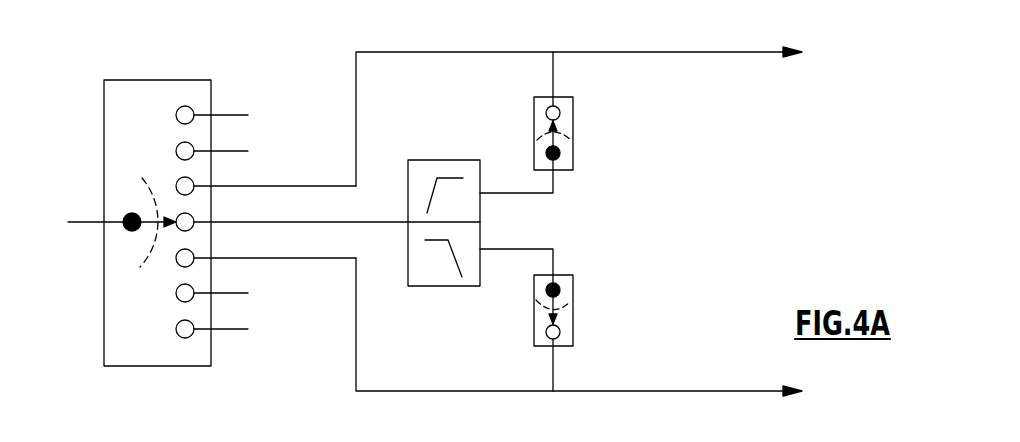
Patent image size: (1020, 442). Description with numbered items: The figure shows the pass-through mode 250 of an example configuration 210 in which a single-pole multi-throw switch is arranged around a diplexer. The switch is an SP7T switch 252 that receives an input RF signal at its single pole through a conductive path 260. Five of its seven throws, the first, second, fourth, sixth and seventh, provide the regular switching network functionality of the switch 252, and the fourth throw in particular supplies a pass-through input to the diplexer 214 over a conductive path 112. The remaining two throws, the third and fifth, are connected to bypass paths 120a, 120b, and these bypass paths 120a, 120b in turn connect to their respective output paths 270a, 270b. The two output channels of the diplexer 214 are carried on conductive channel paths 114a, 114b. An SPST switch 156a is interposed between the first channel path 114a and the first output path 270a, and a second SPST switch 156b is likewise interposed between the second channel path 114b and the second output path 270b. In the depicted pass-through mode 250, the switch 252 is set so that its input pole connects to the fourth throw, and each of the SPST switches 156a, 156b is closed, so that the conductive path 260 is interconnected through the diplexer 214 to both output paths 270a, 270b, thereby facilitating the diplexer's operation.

The configuration 210 is at (813, 150).
The pass-through mode 250 is at (297, 44).
The SP7T switch 252 is at (155, 80).
The conductive path 260 is at (98, 221).
The bypass path 120a is at (274, 186).
The bypass path 120b is at (272, 258).
The conductive path 112 is at (288, 221).
The diplexer 214 is at (445, 287).
The conductive channel path 114a is at (537, 194).
The conductive channel path 114b is at (537, 249).
The SPST switch 156a is at (575, 116).
The SPST switch 156b is at (575, 327).
The output path 270a is at (668, 52).
The output path 270b is at (668, 392).